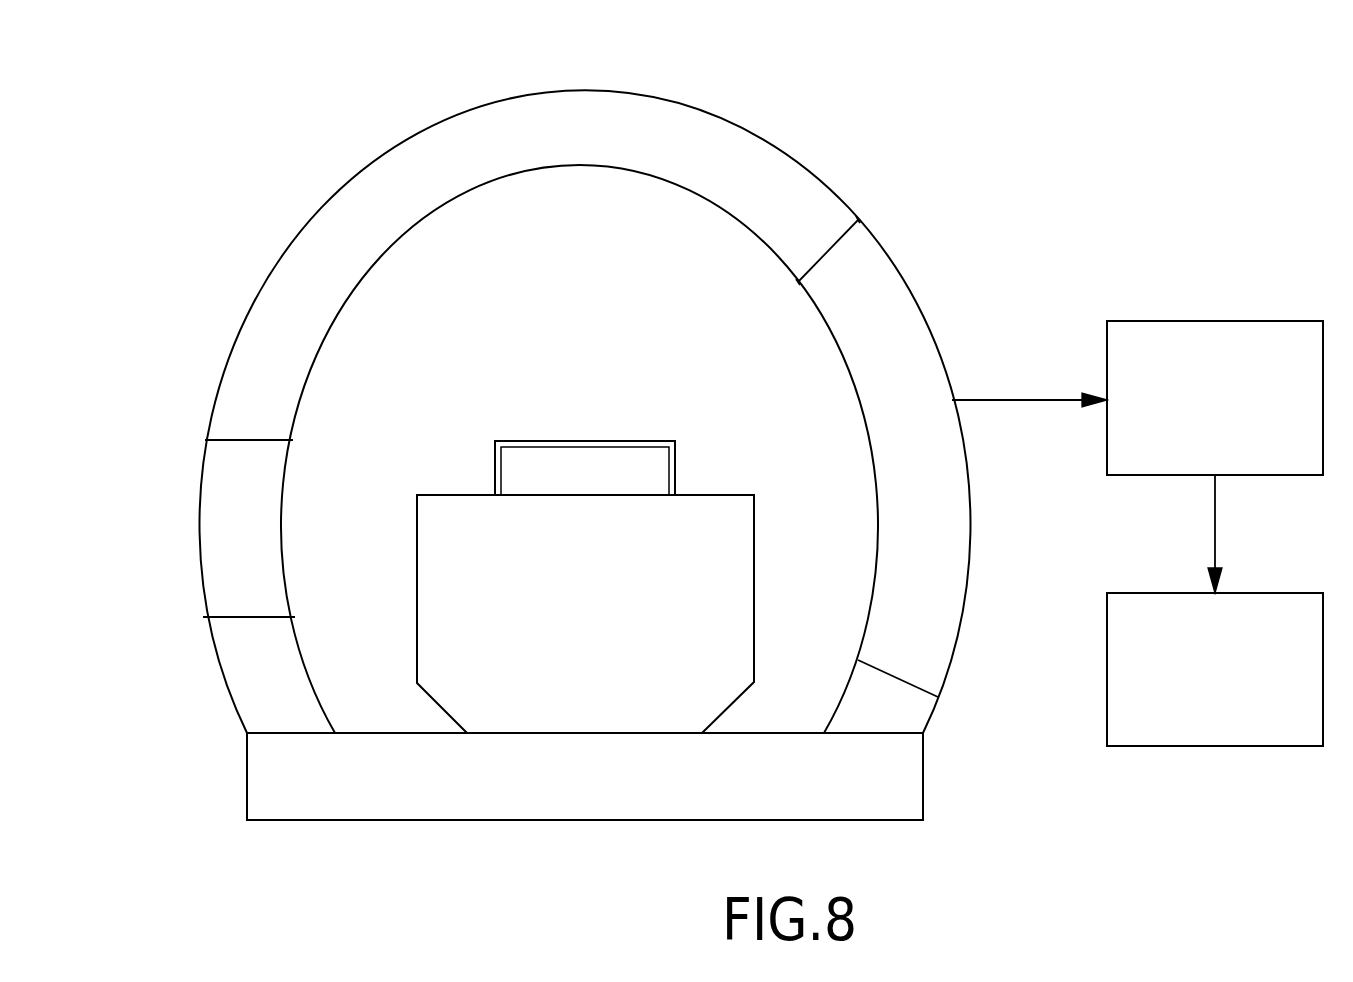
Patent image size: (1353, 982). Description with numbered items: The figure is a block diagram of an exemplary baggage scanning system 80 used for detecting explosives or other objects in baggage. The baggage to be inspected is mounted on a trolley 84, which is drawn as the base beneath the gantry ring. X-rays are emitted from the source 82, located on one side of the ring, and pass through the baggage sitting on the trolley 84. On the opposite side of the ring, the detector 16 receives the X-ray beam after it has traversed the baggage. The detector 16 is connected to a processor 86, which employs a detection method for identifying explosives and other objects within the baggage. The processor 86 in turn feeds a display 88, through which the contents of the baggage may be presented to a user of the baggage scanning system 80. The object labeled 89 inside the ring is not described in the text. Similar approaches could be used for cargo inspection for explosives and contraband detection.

The baggage scanning system 80 is at (887, 112).
The detector 16 is at (872, 333).
The source 82 is at (230, 513).
The trolley 84 is at (535, 798).
The object 89 is at (462, 557).
The processor 86 is at (1137, 398).
The display 88 is at (1215, 610).